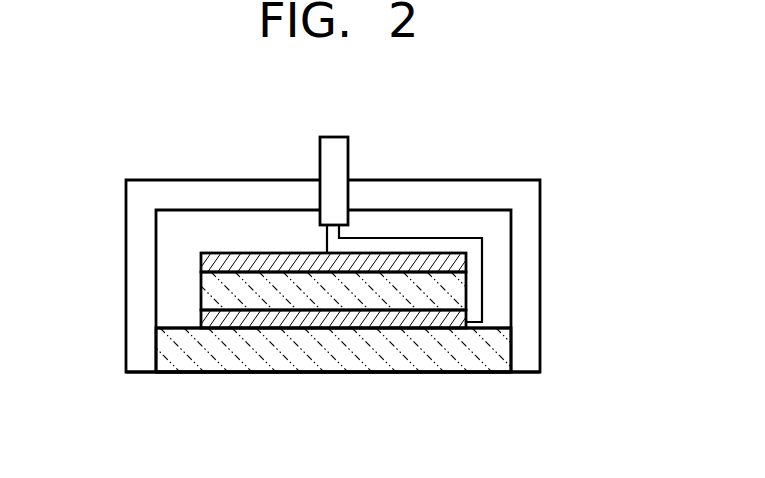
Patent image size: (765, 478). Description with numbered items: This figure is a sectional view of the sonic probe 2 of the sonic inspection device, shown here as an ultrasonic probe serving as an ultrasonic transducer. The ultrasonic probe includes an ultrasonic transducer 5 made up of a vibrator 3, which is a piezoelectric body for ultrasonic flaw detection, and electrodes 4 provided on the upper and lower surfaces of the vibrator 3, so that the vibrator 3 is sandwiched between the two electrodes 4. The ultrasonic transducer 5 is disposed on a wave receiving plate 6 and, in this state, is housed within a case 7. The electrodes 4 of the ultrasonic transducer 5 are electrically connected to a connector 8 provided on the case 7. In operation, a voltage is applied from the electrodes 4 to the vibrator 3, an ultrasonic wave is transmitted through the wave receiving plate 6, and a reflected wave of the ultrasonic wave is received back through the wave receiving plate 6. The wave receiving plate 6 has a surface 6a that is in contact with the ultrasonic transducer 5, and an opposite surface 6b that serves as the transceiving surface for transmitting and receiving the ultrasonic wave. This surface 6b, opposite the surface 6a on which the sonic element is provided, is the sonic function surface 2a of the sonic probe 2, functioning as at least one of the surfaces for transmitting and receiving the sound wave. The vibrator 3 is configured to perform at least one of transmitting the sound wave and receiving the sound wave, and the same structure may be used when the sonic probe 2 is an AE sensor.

The sonic probe 2 is at (481, 138).
The sonic function surface 2a is at (333, 408).
The vibrator 3 is at (201, 290).
The electrodes 4 is at (201, 258).
The ultrasonic transducer 5 is at (265, 285).
The wave receiving plate 6 is at (177, 353).
The surface in contact with the ultrasonic transducer 6a is at (392, 329).
The transceiving surface 6b is at (457, 373).
The case 7 is at (242, 179).
The connector 8 is at (350, 152).